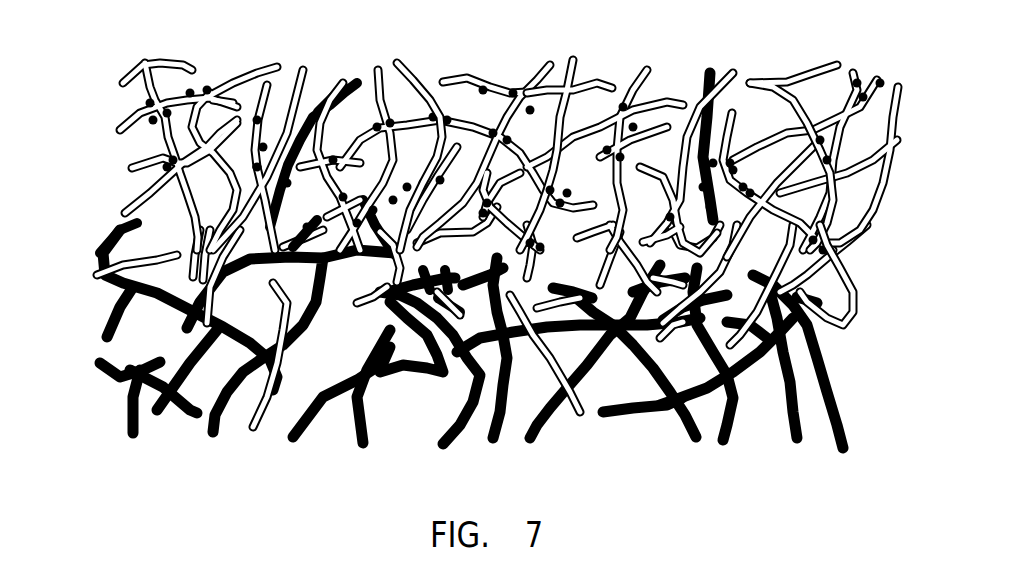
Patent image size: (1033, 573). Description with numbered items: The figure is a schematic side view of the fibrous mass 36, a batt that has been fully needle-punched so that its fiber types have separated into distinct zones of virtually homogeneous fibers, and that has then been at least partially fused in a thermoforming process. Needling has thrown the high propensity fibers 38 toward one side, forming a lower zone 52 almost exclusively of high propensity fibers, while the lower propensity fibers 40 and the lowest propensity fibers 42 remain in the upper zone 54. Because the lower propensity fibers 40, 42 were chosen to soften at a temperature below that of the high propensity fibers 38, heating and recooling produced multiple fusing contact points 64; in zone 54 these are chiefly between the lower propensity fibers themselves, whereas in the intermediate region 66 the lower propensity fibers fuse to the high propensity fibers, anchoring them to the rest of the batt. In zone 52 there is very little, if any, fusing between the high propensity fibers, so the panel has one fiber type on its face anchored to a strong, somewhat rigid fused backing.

The fibrous mass 36 is at (875, 59).
The high propensity fibers 38 is at (800, 433).
The lower propensity fibers 40 is at (612, 84).
The lowest propensity type of fibers 42 is at (805, 51).
The virtual homogeneous zone of high propensity fibers 52 is at (90, 338).
The virtual homogeneous zone of lower propensity fibers 54 is at (90, 53).
The fusing contact points 64 is at (387, 65).
The region 66 is at (90, 218).